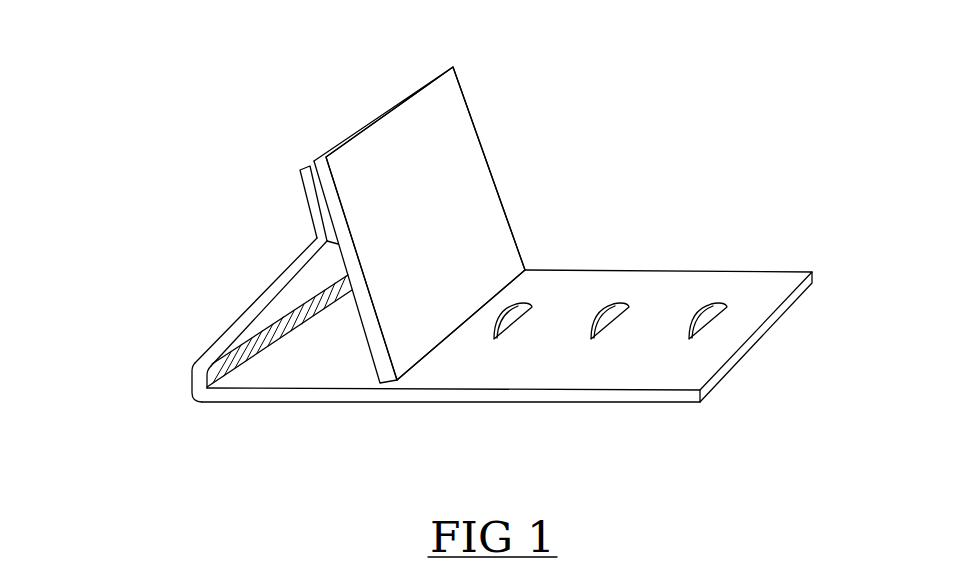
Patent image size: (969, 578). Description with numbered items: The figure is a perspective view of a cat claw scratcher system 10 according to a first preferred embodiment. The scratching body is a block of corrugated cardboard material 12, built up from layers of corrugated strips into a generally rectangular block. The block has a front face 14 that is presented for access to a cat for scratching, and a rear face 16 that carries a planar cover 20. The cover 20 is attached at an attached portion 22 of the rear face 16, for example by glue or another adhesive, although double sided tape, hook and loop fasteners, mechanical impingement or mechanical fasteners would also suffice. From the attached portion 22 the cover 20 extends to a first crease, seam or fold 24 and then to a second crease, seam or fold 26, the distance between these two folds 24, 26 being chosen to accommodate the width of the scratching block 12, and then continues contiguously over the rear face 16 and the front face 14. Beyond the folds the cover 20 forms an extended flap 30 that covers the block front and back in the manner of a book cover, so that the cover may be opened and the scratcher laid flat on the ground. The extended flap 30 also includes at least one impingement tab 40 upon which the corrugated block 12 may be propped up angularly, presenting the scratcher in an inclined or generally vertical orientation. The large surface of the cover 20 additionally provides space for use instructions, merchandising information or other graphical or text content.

The claw scratcher system 10 is at (307, 103).
The block of corrugated cardboard material 12 is at (486, 110).
The front face 14 is at (463, 212).
The rear face 16 is at (331, 273).
The planar cover 20 is at (692, 377).
The attached portion 22 is at (281, 177).
The first fold 24 is at (178, 369).
The second fold 26 is at (186, 410).
The extended flap 30 is at (697, 433).
The impingement tab 40 is at (734, 295).